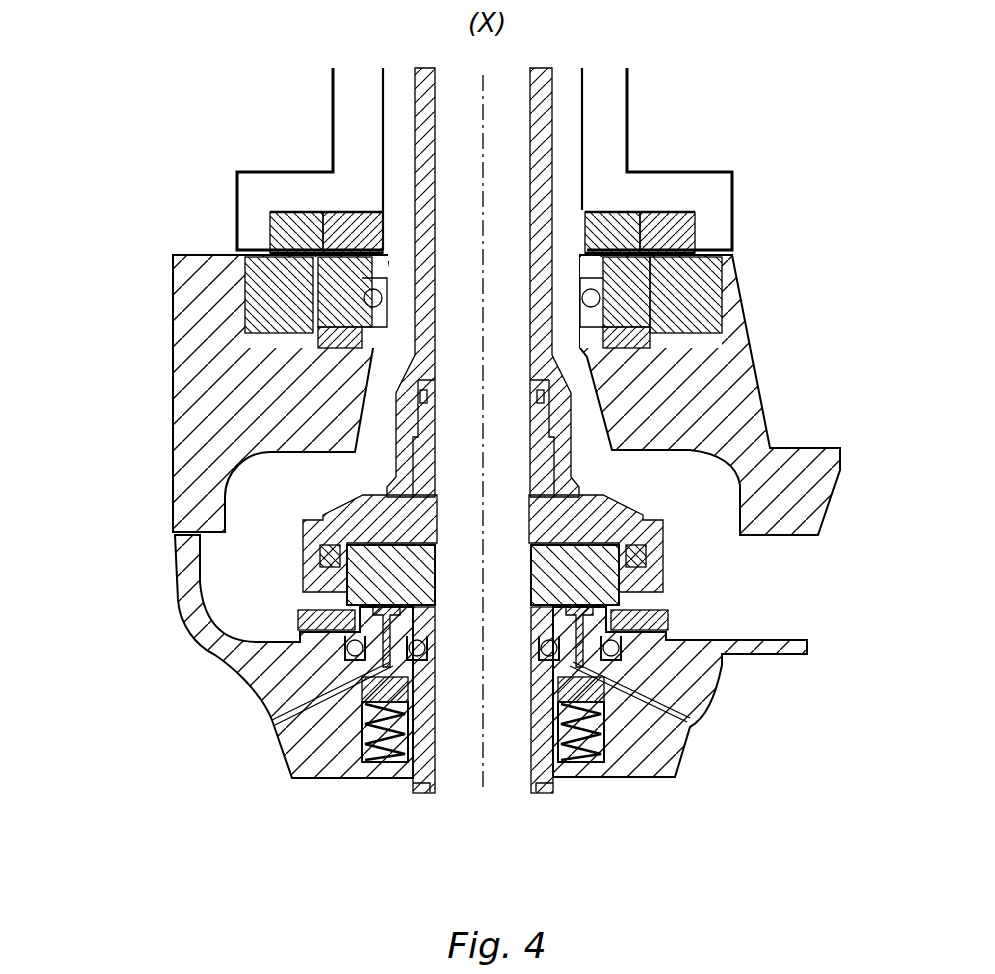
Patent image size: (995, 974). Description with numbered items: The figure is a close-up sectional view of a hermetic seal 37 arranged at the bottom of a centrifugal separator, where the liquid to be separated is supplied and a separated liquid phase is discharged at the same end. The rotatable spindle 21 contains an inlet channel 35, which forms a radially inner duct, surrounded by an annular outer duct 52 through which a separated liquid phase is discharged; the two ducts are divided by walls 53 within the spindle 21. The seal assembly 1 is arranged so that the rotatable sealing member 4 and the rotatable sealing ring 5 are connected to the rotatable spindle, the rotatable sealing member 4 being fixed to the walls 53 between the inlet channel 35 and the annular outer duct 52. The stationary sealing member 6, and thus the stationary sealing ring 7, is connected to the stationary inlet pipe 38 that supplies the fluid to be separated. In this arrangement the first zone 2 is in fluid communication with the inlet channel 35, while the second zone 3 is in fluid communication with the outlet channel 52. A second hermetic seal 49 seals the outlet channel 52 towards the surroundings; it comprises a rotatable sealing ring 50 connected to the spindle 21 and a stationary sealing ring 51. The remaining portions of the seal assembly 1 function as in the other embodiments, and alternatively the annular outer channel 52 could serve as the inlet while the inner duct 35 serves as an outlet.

The seal assembly 1 is at (268, 562).
The first zone 2 is at (509, 583).
The second zone 3 is at (280, 518).
The rotatable sealing member 4 is at (583, 568).
The rotatable sealing ring 5 is at (643, 595).
The stationary sealing member 6 is at (643, 757).
The stationary sealing ring 7 is at (587, 650).
The spindle 21 is at (357, 100).
The inlet channel 35 is at (457, 90).
The hermetic seal 37 is at (132, 484).
The stationary inlet pipe 38 is at (417, 785).
The second hermetic seal 49 is at (756, 240).
The rotatable sealing ring 50 is at (690, 213).
The stationary sealing ring 51 is at (633, 300).
The annular outer duct 52 is at (573, 142).
The walls 53 is at (540, 100).